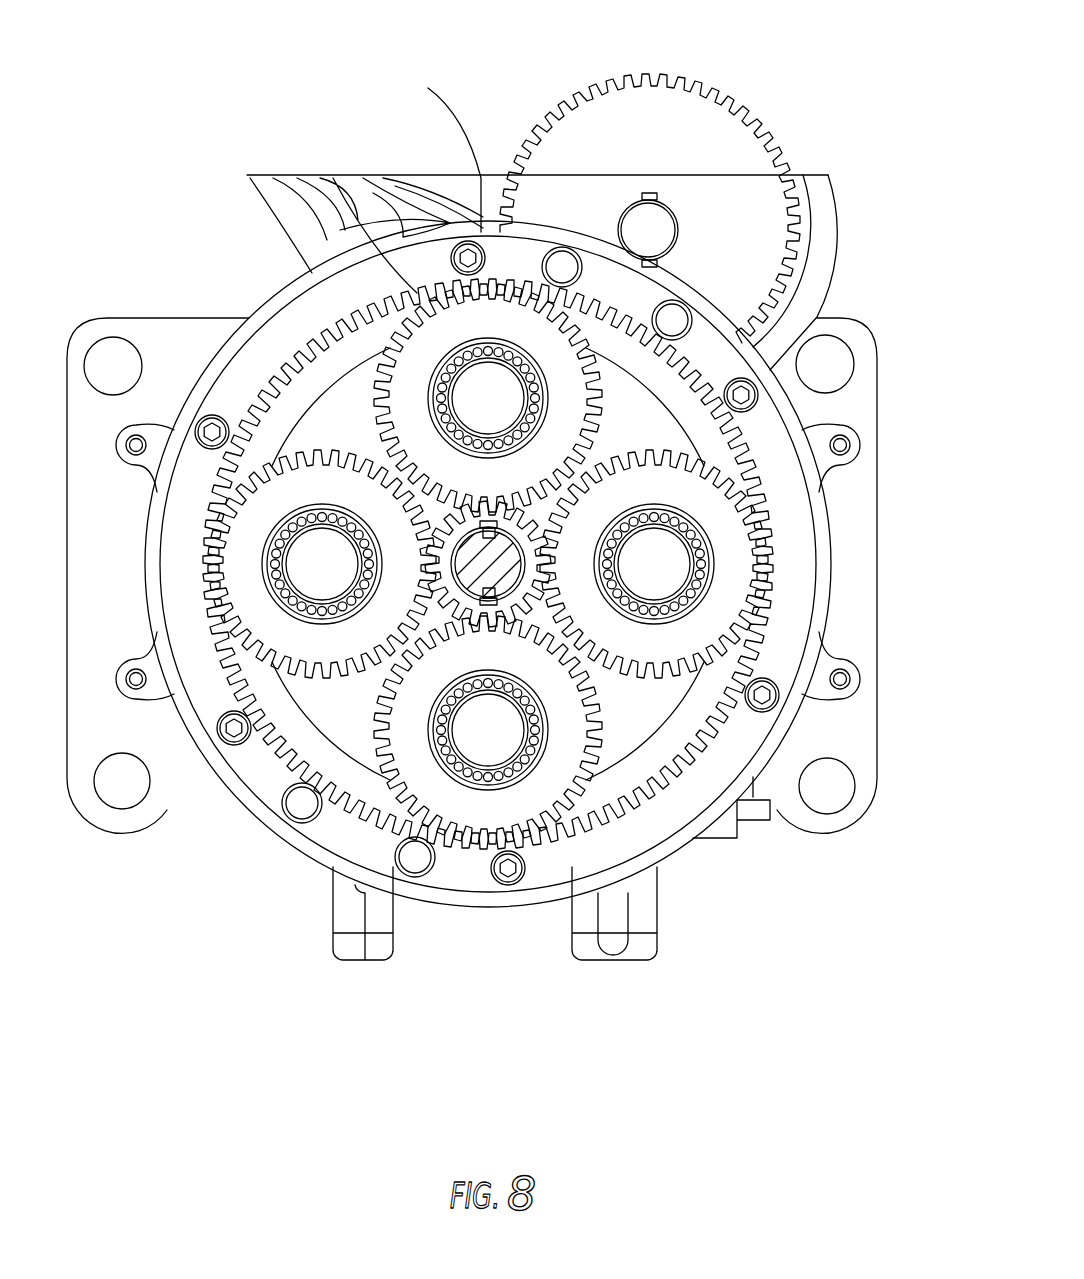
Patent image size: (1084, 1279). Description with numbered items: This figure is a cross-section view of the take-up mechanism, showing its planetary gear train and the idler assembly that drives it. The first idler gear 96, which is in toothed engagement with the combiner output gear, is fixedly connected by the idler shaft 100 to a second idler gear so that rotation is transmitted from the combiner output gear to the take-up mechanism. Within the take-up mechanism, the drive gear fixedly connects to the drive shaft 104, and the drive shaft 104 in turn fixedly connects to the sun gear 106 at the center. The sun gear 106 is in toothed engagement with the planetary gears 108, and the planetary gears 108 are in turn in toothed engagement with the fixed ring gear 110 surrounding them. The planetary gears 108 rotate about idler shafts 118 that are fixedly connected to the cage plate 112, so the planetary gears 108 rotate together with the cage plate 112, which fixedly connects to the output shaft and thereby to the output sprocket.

The first idler gear 96 is at (767, 127).
The idler shaft 100 is at (647, 232).
The drive shaft 104 is at (505, 598).
The sun gear 106 is at (687, 596).
The planetary gears 108 is at (318, 453).
The fixed ring gear 110 is at (300, 833).
The cage plate 112 is at (695, 366).
The idler shafts 118 is at (472, 397).